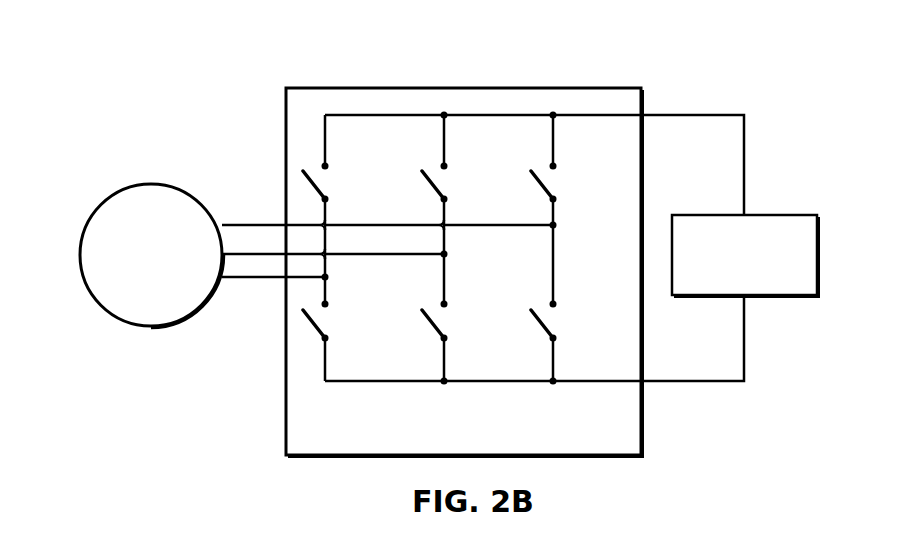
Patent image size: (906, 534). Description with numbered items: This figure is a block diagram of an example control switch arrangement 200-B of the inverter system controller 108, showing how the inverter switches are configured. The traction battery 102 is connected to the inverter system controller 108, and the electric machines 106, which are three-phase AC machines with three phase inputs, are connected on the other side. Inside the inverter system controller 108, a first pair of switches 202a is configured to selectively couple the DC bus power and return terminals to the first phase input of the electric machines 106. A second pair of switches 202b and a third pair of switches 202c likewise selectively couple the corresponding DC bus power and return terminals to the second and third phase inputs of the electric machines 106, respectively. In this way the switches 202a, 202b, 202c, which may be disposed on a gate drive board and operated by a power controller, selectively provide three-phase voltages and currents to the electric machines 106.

The control switch arrangement 200-B is at (706, 58).
The traction battery 102 is at (745, 256).
The electric machines 106 is at (318, 256).
The inverter system controller 108 is at (464, 272).
The first pair of switches 202a is at (329, 193).
The second pair of switches 202b is at (448, 193).
The third pair of switches 202c is at (557, 193).